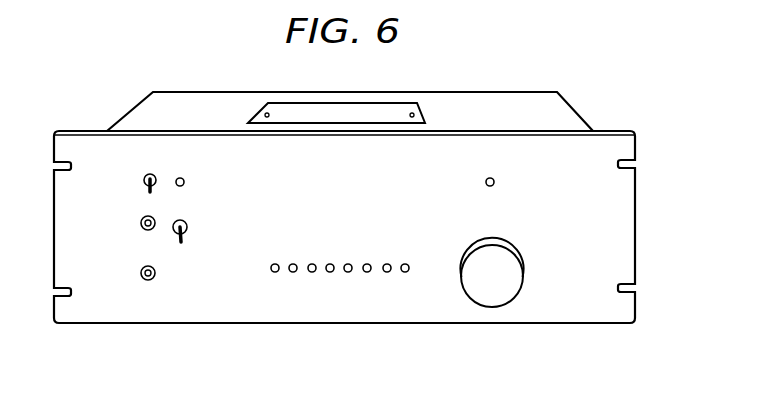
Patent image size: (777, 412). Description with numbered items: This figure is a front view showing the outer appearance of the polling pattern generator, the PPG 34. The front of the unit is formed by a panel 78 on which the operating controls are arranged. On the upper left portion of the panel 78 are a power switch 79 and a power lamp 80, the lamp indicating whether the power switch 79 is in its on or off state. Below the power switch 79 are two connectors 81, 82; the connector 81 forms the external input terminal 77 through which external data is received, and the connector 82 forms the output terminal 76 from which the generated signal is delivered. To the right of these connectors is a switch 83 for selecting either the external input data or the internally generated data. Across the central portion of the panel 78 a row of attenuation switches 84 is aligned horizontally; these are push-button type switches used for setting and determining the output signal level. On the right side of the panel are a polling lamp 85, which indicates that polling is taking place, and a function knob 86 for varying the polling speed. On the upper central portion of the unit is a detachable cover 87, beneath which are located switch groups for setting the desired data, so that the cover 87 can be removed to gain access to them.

The PPG 34 is at (509, 100).
The panel 78 is at (632, 217).
The power switch 79 is at (143, 182).
The power lamp 80 is at (184, 183).
The connector 81 is at (118, 226).
The external input terminal 77 is at (140, 222).
The connector 82 is at (127, 282).
The output terminal 76 is at (141, 271).
The switch 83 is at (183, 244).
The attenuation switches 84 is at (410, 275).
The polling lamp 85 is at (494, 183).
The function knob 86 is at (492, 298).
The detachable cover 87 is at (353, 112).